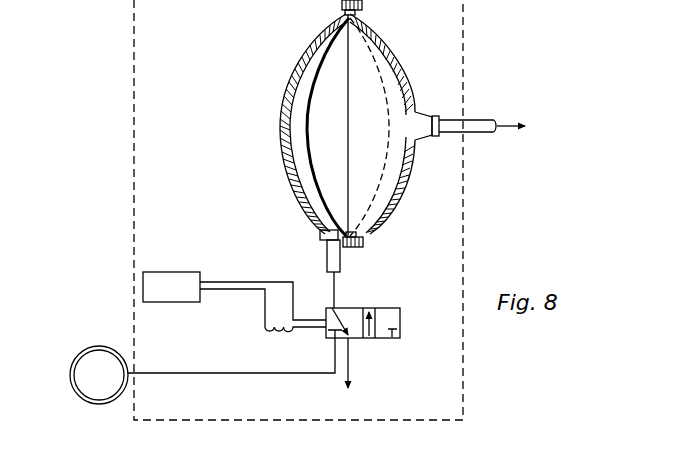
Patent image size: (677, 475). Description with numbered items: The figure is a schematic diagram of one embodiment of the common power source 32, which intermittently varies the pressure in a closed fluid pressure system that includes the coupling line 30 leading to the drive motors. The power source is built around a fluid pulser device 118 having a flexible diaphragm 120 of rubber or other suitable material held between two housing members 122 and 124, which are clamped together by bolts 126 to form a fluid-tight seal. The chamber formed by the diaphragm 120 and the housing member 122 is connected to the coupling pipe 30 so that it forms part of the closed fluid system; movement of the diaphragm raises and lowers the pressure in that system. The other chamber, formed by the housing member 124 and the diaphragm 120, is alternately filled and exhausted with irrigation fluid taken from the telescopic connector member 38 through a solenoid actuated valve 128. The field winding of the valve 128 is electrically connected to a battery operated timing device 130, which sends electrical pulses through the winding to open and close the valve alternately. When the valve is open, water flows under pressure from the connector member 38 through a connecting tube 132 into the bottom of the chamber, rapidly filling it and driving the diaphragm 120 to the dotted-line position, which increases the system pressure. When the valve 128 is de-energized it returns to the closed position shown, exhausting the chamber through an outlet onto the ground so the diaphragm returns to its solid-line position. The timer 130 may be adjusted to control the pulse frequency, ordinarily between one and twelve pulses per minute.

The coupling line 30 is at (478, 119).
The common power source 32 is at (132, 172).
The telescopic connector member 38 is at (82, 355).
The fluid pulser device 118 is at (340, 125).
The flexible diaphragm 120 is at (310, 126).
The housing member 122 is at (401, 67).
The housing member 124 is at (283, 160).
The bolts 126 is at (363, 6).
The solenoid actuated valve 128 is at (317, 327).
The timing device 130 is at (178, 271).
The connecting tube 132 is at (327, 258).